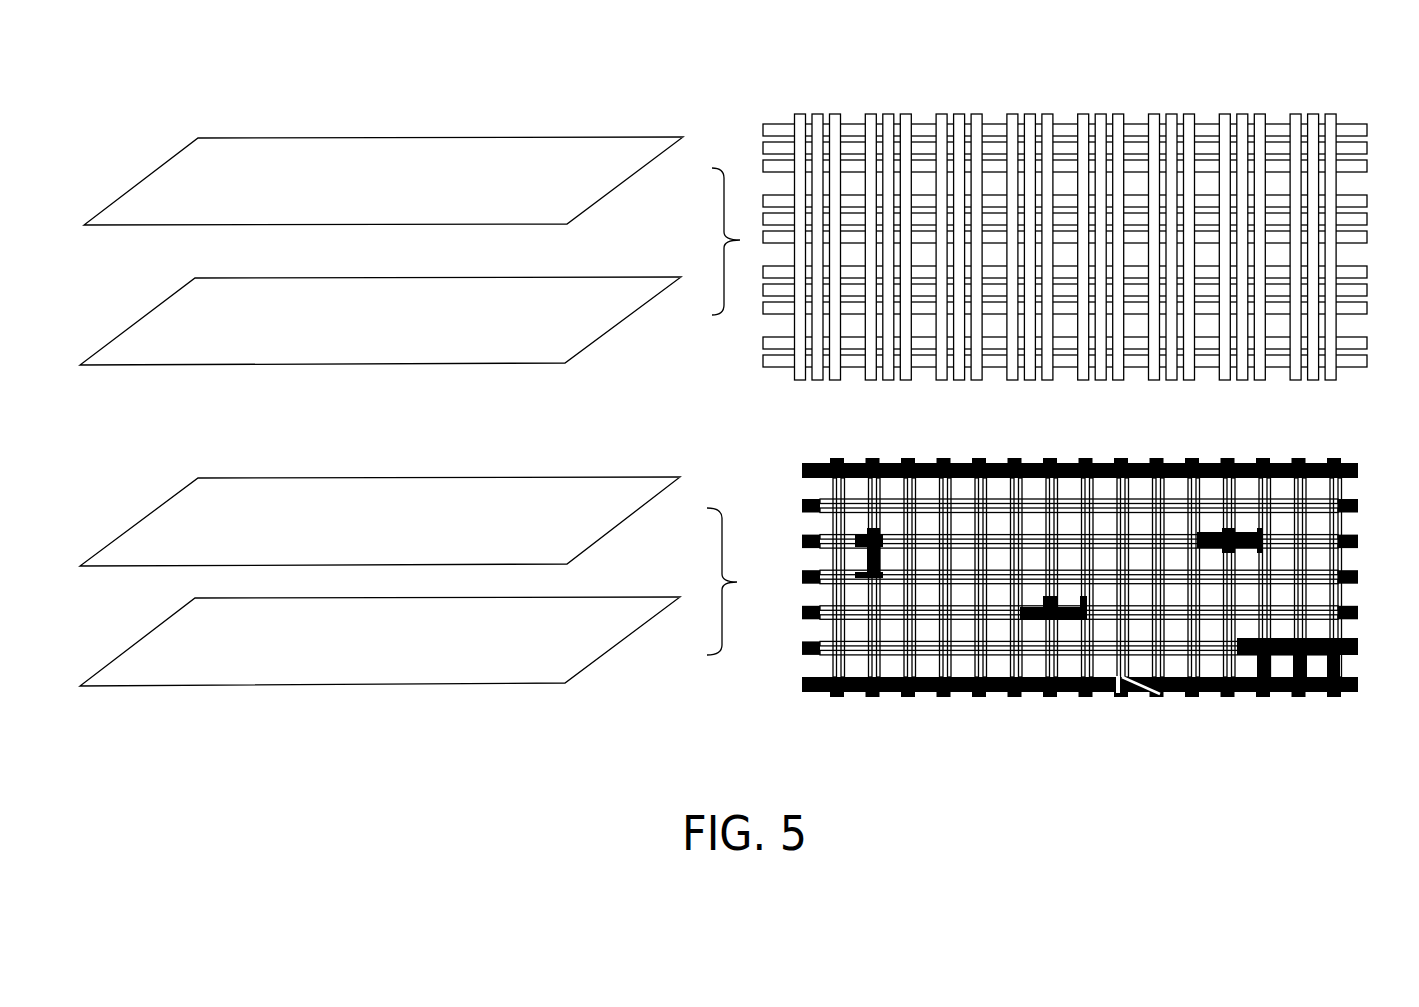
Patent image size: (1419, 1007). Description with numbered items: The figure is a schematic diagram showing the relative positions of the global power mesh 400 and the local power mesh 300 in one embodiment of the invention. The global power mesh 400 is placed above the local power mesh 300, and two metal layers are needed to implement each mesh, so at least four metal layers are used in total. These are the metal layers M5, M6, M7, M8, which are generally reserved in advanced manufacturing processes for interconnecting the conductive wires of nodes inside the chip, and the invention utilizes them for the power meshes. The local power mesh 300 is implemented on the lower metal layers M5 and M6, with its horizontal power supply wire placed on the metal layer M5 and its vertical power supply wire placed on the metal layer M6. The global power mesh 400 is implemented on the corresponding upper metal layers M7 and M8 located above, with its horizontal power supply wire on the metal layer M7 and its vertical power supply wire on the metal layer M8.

The local power mesh 300 is at (1357, 463).
The global power mesh 400 is at (1353, 132).
The metal layer M5 is at (380, 641).
The metal layer M6 is at (380, 521).
The metal layer M7 is at (380, 321).
The metal layer M8 is at (383, 181).